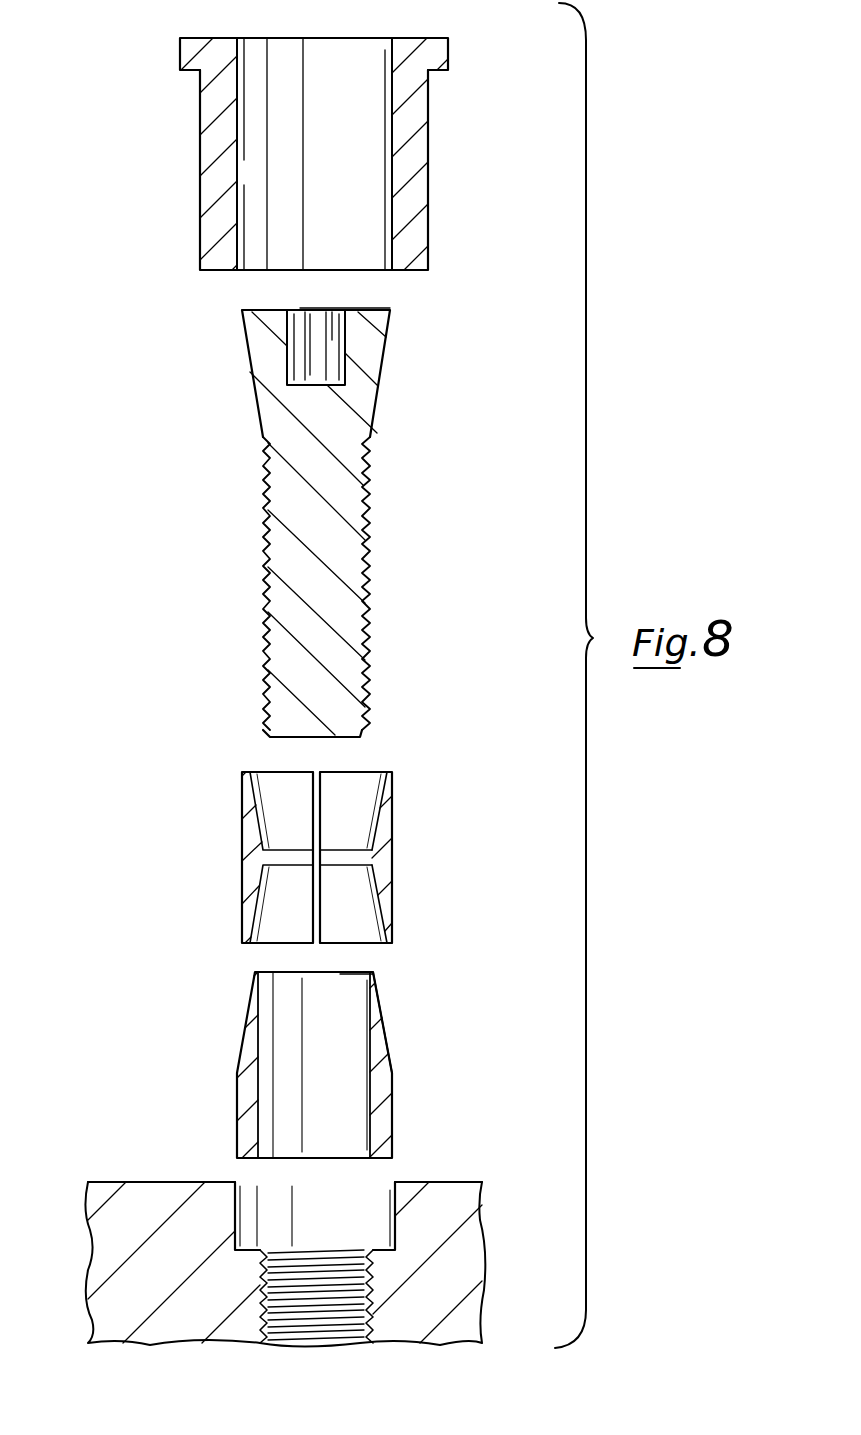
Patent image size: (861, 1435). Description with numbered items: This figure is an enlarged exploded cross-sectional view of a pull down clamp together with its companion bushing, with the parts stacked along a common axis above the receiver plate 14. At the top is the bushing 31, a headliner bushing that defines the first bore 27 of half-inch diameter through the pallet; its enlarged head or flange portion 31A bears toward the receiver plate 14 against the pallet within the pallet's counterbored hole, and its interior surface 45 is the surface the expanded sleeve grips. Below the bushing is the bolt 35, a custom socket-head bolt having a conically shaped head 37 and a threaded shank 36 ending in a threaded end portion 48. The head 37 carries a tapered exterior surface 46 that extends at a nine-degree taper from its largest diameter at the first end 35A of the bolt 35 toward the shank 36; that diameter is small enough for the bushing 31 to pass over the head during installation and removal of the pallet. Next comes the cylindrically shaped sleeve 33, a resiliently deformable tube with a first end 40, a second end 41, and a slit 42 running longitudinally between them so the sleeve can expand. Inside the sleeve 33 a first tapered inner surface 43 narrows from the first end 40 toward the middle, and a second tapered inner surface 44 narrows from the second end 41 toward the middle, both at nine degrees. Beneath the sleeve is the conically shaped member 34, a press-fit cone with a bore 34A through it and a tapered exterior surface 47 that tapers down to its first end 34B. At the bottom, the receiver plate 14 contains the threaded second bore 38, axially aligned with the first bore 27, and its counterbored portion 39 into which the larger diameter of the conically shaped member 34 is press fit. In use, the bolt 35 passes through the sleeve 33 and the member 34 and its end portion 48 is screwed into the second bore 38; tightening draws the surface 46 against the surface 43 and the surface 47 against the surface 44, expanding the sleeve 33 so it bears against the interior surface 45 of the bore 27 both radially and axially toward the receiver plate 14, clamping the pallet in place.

The receiver plate 14 is at (468, 1182).
The first bore 27 is at (354, 70).
The bushing 31 is at (200, 176).
The flange portion 31A is at (207, 55).
The interior surface 45 is at (392, 160).
The bolt 35 is at (328, 509).
The first end of the bolt 35A is at (375, 310).
The tapered exterior surface 46 is at (386, 356).
The conically shaped head 37 is at (251, 372).
The threaded shank 36 is at (262, 576).
The threaded end portion 48 is at (262, 715).
The sleeve 33 is at (242, 848).
The first end 40 is at (389, 773).
The second end 41 is at (392, 943).
The slit 42 is at (318, 768).
The first tapered inner surface 43 is at (381, 806).
The second tapered inner surface 44 is at (378, 895).
The conically shaped member 34 is at (237, 1095).
The bore 34A is at (295, 990).
The first end of the conically shaped member 34B is at (373, 962).
The tapered exterior surface 47 is at (392, 1042).
The counterbored portion 39 is at (243, 1218).
The threaded second bore 38 is at (280, 1304).